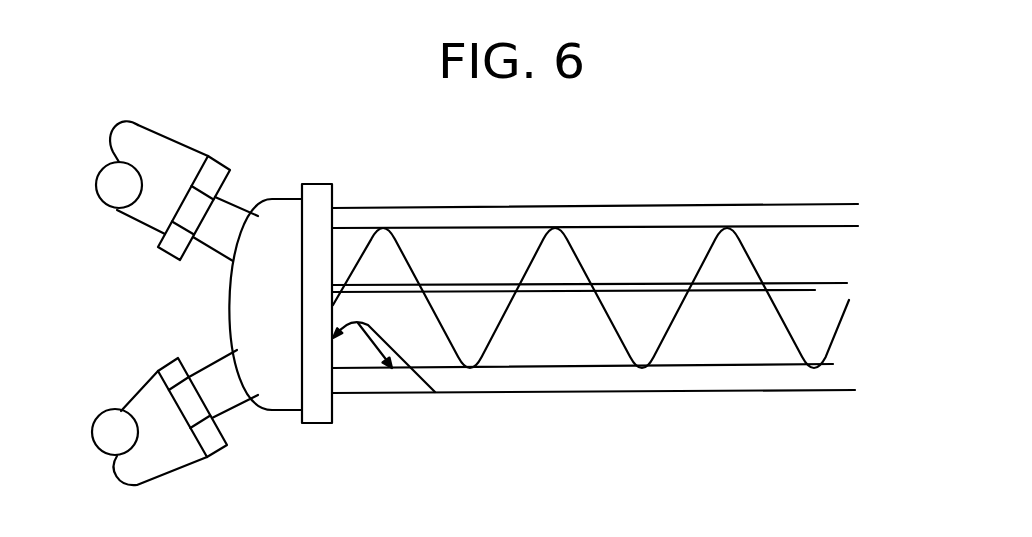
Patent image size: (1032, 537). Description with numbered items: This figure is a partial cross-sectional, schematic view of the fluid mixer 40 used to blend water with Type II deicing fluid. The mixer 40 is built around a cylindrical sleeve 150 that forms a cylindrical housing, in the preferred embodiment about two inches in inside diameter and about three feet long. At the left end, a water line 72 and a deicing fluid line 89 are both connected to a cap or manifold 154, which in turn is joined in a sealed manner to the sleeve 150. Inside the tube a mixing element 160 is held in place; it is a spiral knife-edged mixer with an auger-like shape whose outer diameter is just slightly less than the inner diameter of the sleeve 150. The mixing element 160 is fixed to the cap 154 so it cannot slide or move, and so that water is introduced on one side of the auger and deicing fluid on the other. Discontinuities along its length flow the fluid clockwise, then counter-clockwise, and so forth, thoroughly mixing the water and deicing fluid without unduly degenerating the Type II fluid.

The mixer 40 is at (604, 402).
The water line 72 is at (176, 150).
The deicing fluid line 89 is at (178, 463).
The cylindrical sleeve 150 is at (628, 203).
The cap or manifold 154 is at (228, 302).
The mixing element 160 is at (764, 267).